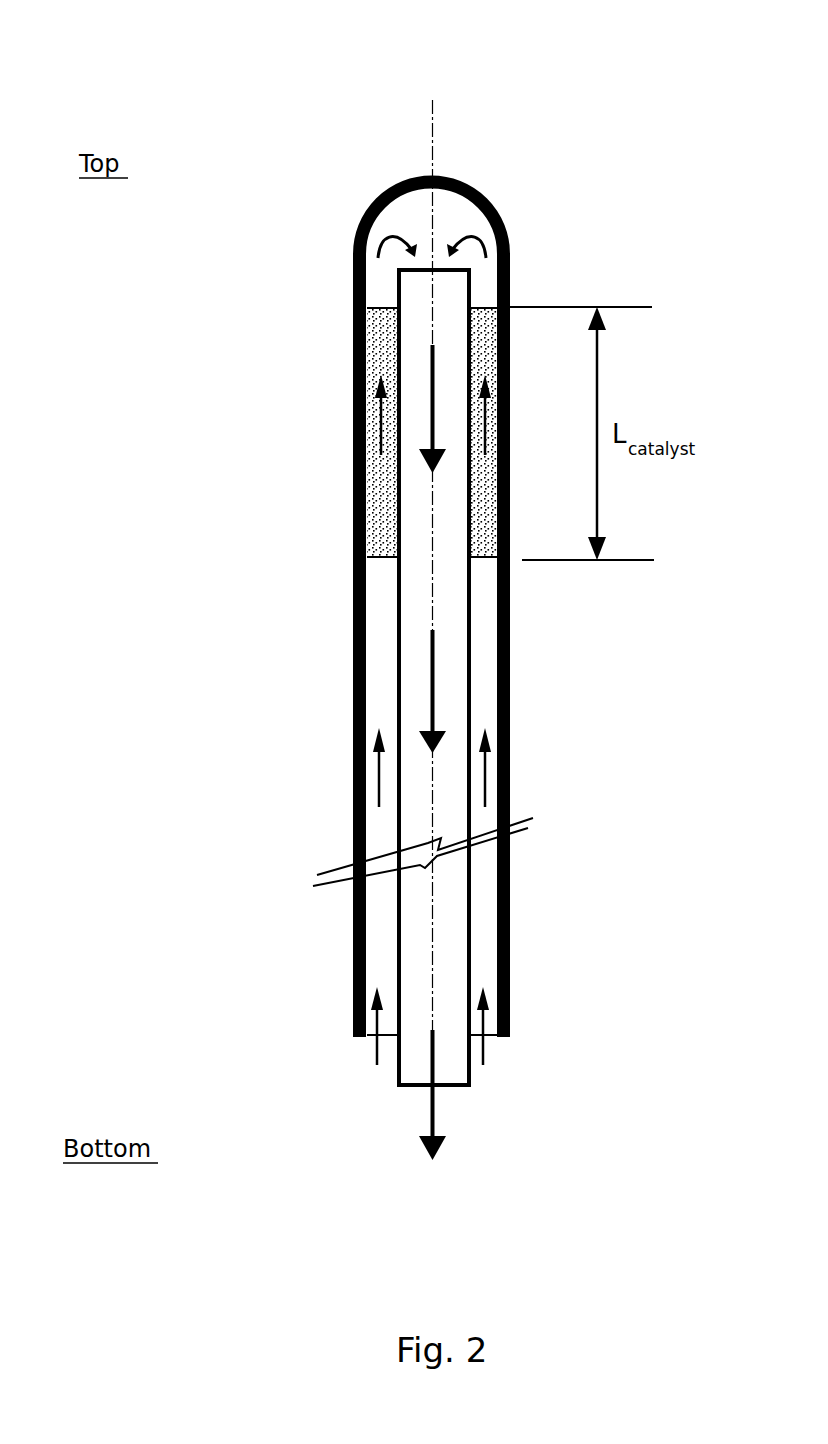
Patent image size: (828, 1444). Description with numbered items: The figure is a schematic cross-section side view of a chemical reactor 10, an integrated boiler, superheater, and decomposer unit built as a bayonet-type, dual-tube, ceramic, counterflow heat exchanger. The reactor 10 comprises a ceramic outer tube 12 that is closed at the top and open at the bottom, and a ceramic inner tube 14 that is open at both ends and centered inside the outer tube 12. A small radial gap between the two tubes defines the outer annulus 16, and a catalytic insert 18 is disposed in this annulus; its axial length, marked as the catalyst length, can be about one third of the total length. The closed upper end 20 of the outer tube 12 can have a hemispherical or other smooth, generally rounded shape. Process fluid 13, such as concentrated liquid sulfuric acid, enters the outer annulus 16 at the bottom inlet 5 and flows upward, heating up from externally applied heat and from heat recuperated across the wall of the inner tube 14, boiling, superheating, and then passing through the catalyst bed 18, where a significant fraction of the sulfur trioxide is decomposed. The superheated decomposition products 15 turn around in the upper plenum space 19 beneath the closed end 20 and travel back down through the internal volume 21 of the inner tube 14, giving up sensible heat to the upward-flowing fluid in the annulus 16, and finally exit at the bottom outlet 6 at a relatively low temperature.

The chemical reactor 10 is at (269, 50).
The outer tube 12 is at (513, 677).
The process fluid 13 is at (375, 778).
The inner tube 14 is at (475, 928).
The superheated decomposition products 15 is at (437, 368).
The outer annulus 16 is at (382, 665).
The catalytic insert 18 is at (378, 520).
The upper plenum space 19 is at (410, 215).
The closed upper end 20 is at (488, 188).
The internal volume of inner tube 21 is at (445, 571).
The inlet 5 is at (444, 1044).
The outlet 6 is at (440, 1116).